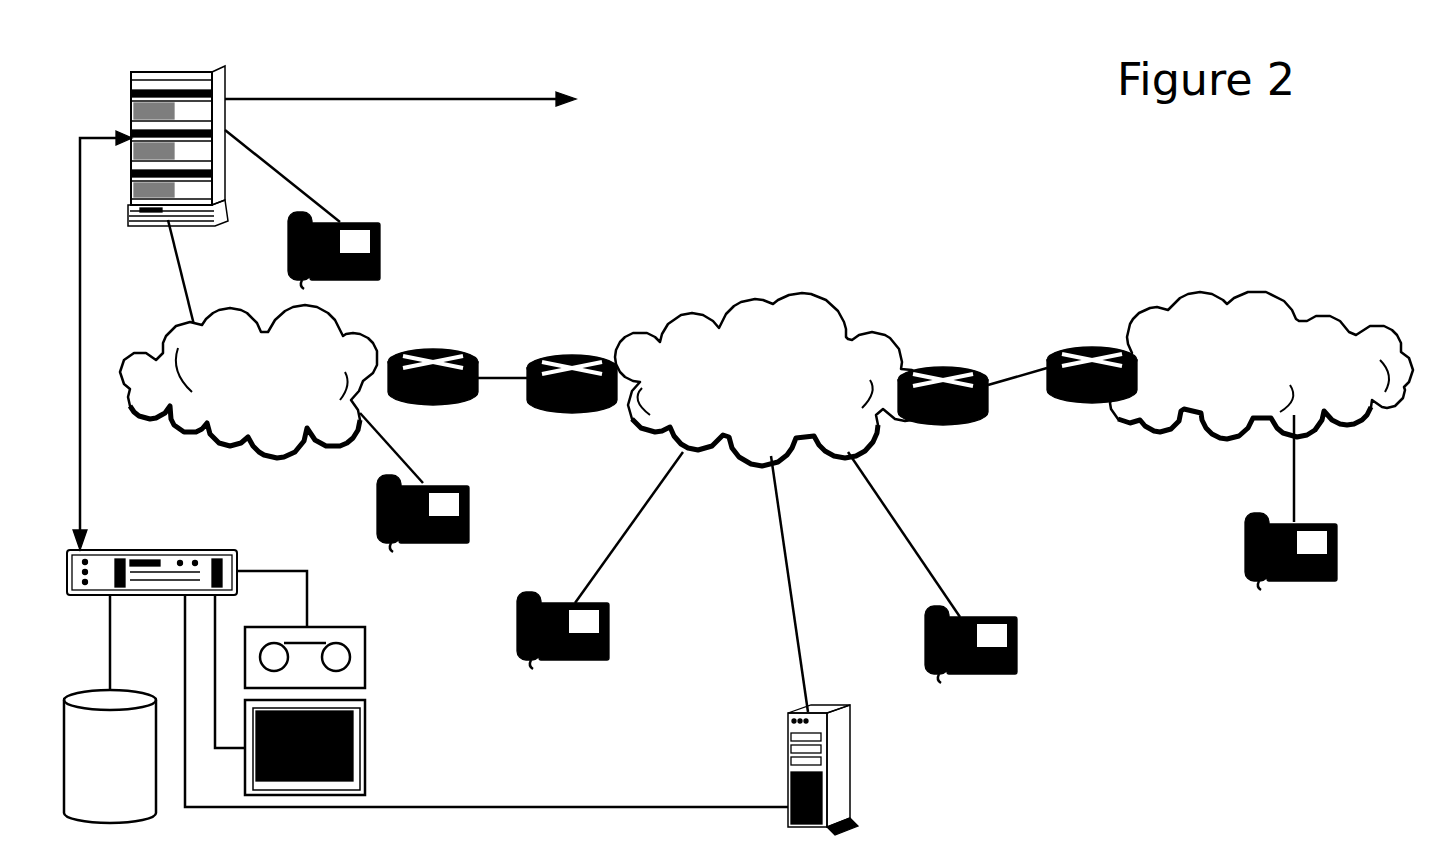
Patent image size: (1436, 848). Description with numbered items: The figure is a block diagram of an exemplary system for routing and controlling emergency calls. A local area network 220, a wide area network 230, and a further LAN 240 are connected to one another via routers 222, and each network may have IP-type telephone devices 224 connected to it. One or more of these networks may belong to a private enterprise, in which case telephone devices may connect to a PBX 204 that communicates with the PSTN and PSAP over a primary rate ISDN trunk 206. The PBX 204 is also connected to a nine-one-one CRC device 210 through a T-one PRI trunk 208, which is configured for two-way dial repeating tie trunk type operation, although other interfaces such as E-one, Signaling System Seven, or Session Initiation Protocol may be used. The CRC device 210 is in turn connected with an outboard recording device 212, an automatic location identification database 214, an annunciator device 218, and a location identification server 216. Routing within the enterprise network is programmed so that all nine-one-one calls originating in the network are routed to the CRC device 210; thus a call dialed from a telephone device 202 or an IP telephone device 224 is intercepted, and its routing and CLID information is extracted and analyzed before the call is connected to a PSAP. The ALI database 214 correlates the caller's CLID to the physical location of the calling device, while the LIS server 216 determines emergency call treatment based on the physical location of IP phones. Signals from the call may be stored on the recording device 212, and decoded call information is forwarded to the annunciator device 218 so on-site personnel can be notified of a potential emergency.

The telephone device 202 is at (380, 252).
The PBX 204 is at (186, 72).
The primary rate ISDN (PRI) trunk 206 is at (497, 93).
The T1 PRI trunk 208 is at (102, 340).
The 9-1-1 CRC device 210 is at (117, 552).
The outboard recording device 212 is at (355, 645).
The automatic location identification (ALI) database 214 is at (110, 709).
The location identification server (LIS) 216 is at (848, 795).
The annunciator device 218 is at (365, 745).
The local area network (LAN) 220 is at (248, 339).
The routers 222 is at (440, 357).
The telephone devices 224 is at (848, 557).
The wide area network (WAN) 230 is at (773, 379).
The LAN 240 is at (1261, 365).